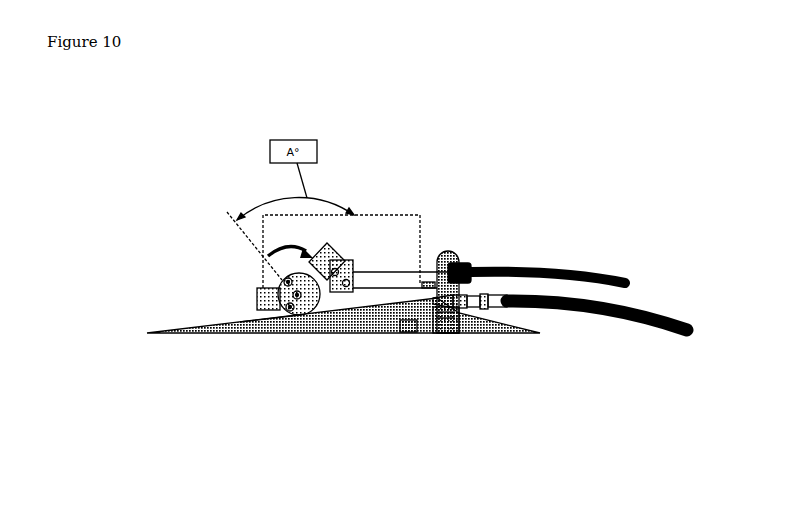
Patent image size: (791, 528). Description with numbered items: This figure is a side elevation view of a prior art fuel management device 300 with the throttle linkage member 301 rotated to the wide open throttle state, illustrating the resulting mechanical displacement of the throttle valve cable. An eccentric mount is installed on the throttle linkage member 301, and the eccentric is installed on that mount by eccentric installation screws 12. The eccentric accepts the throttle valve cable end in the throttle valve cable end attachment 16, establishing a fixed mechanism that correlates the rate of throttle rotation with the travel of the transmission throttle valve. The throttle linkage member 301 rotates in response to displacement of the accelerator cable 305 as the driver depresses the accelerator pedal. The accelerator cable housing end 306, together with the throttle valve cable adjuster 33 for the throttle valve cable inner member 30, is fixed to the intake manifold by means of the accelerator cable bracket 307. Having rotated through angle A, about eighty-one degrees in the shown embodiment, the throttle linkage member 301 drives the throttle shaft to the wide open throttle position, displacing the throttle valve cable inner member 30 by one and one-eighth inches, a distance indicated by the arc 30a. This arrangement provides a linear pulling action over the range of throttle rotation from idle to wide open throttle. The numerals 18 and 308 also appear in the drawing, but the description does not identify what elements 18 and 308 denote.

The eccentric installation screws 12 is at (257, 300).
The throttle valve cable end attachment 16 is at (284, 280).
The pivot hub 18 is at (303, 316).
The throttle valve cable inner member 30 is at (405, 330).
The arc 30a is at (268, 318).
The throttle valve cable adjuster 33 is at (455, 335).
The fuel management device 300 is at (350, 268).
The throttle linkage member 301 is at (322, 266).
The accelerator cable 305 is at (447, 252).
The accelerator cable housing end 306 is at (482, 268).
The accelerator cable bracket 307 is at (461, 263).
The base plate 308 is at (218, 318).